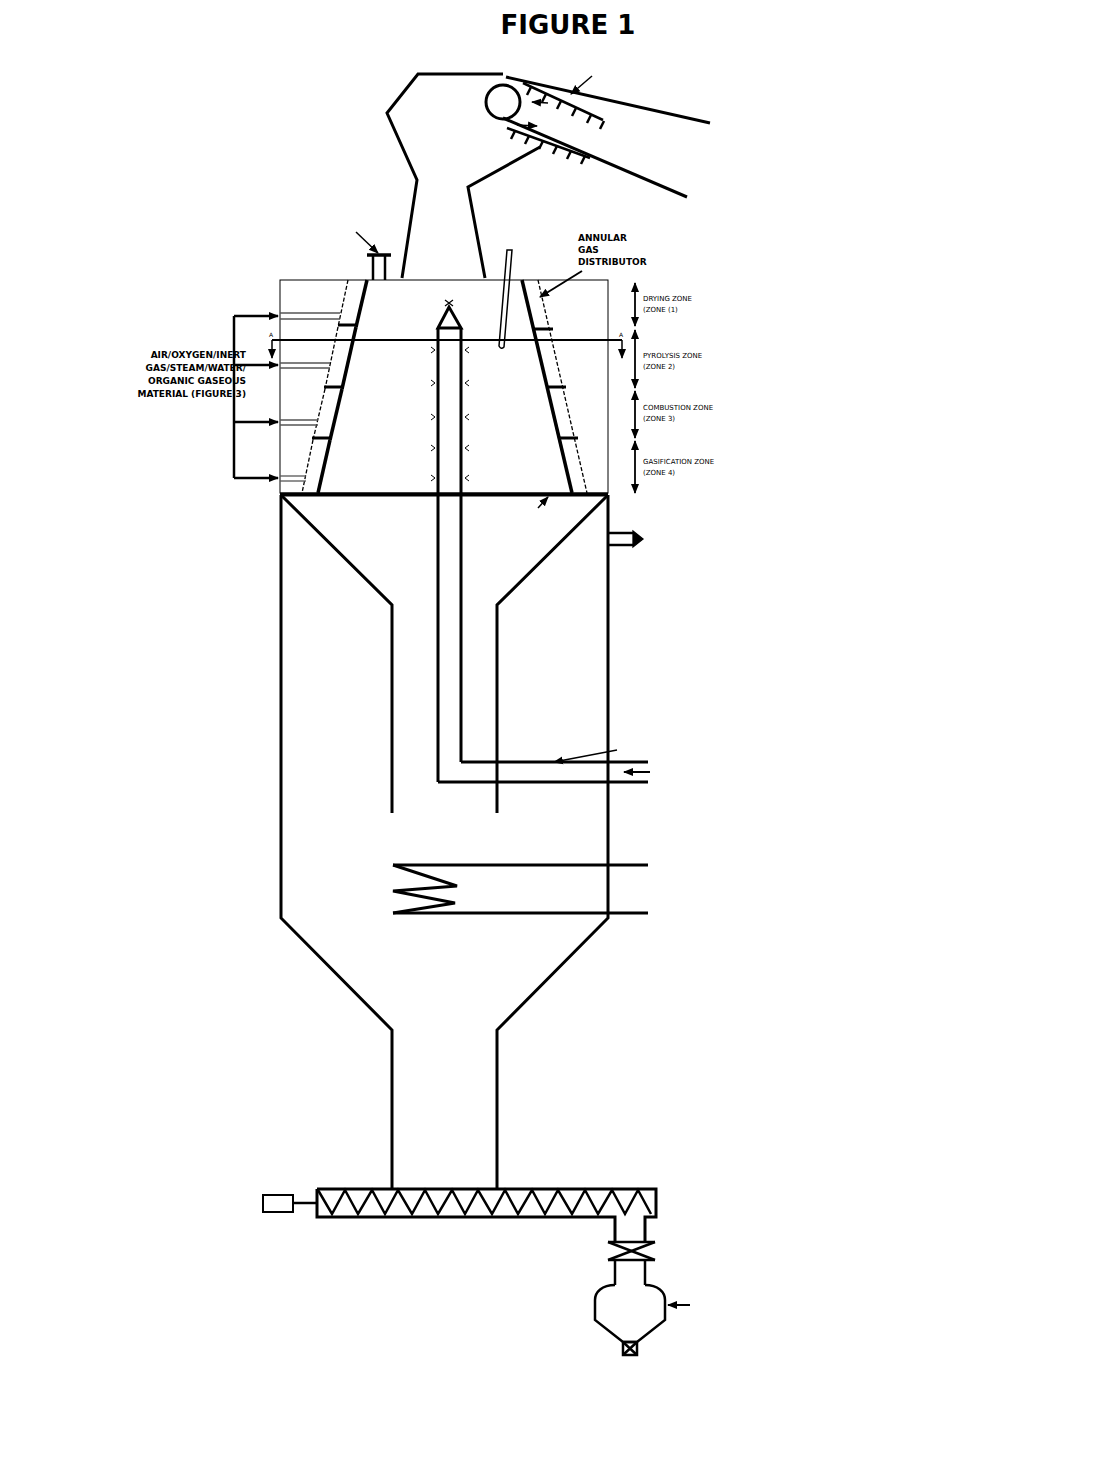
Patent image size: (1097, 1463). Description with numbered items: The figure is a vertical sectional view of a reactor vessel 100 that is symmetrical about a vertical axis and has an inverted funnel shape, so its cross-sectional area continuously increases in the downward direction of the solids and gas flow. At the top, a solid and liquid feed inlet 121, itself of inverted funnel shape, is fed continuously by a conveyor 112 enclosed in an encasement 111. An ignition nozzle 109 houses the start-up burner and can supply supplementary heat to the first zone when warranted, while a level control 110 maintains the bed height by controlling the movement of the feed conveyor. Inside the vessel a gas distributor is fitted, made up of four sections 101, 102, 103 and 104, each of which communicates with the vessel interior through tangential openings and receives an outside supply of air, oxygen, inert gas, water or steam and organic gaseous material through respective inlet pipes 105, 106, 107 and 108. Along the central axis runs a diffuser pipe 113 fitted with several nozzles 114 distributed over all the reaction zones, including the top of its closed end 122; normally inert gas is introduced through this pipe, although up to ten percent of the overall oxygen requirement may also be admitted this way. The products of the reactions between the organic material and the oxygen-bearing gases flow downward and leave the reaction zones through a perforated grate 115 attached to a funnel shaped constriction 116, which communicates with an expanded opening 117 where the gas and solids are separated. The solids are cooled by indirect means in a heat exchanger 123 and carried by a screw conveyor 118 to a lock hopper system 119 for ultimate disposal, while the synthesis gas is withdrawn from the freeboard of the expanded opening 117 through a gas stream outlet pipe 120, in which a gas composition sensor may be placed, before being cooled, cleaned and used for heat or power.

The reactor vessel 100 is at (280, 560).
The gas distributor section 101 is at (362, 322).
The gas distributor section 102 is at (352, 353).
The gas distributor section 103 is at (341, 407).
The gas distributor section 104 is at (325, 477).
The inlet pipe 105 is at (278, 315).
The inlet pipe 106 is at (275, 364).
The inlet pipe 107 is at (278, 421).
The inlet pipe 108 is at (278, 477).
The ignition nozzle 109 is at (366, 253).
The level control 110 is at (510, 249).
The encasement 111 is at (555, 67).
The conveyor 112 is at (510, 76).
The diffuser pipe 113 is at (463, 467).
The nozzles 114 is at (467, 415).
The perforated grate 115 is at (402, 497).
The funnel shaped constriction 116 is at (544, 560).
The expanded opening 117 is at (283, 773).
The screw conveyor 118 is at (518, 1188).
The lock hopper system 119 is at (661, 1283).
The gas stream outlet pipe 120 is at (639, 541).
The solid and liquid feed inlet 121 is at (415, 188).
The closed end of the diffuser pipe 122 is at (459, 320).
The heat exchanger 123 is at (572, 864).